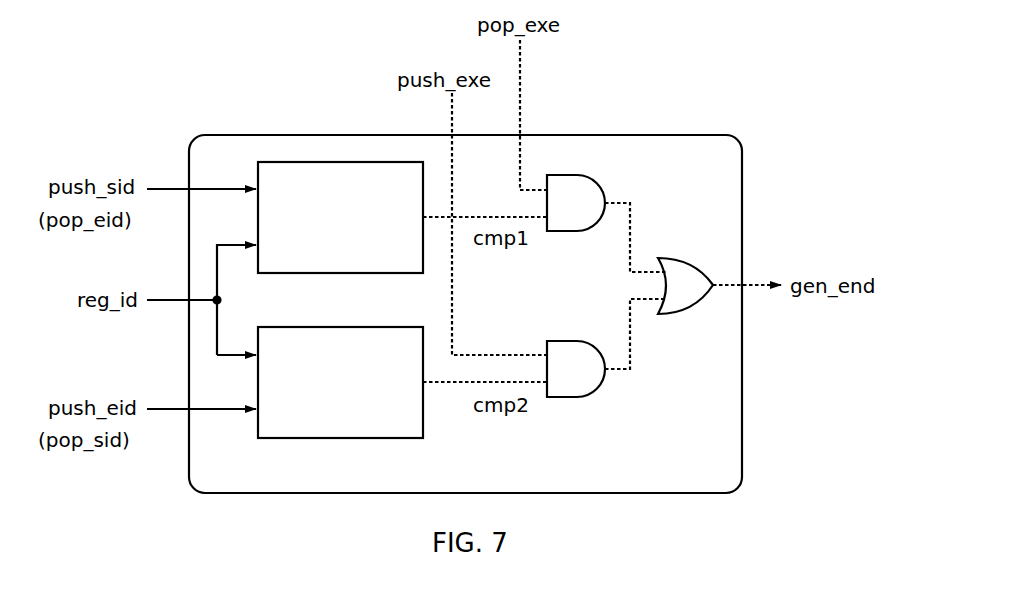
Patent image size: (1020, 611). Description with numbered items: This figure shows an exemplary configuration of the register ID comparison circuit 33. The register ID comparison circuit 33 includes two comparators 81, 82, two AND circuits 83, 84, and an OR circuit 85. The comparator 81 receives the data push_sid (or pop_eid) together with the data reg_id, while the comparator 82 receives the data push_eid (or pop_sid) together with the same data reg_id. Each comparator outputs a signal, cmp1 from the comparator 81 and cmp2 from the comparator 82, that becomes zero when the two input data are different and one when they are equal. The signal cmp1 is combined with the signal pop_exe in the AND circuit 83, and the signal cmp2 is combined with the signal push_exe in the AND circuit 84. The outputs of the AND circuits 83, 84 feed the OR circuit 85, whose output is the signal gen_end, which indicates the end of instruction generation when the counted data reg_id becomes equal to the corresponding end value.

The register ID comparison circuit 33 is at (742, 190).
The comparator 81 is at (273, 274).
The comparator 82 is at (273, 439).
The AND circuit 83 is at (562, 232).
The AND circuit 84 is at (562, 398).
The OR circuit 85 is at (672, 315).